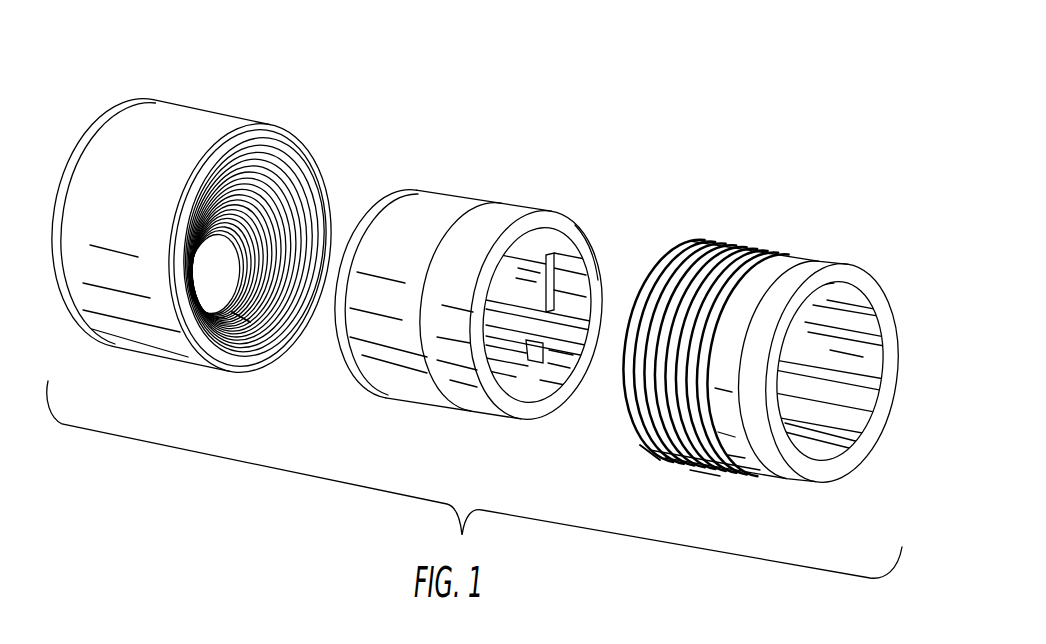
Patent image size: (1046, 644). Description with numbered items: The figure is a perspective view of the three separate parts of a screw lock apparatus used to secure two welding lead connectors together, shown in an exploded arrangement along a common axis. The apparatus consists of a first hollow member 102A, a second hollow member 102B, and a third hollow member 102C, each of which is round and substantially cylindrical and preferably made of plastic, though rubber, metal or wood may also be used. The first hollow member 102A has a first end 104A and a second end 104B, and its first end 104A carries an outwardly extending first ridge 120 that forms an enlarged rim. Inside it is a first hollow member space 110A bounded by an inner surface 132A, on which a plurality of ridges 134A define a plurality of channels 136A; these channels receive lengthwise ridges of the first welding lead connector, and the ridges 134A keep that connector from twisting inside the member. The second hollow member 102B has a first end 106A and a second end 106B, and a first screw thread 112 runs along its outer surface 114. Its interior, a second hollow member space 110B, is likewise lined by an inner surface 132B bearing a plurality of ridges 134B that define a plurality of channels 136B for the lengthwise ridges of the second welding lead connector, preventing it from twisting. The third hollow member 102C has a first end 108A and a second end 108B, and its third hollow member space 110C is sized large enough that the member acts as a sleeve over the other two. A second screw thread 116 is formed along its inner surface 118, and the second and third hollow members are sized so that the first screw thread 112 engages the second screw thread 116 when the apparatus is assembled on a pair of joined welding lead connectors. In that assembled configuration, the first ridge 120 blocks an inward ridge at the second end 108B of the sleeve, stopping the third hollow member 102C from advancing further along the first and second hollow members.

The first hollow member 102A is at (393, 352).
The second hollow member 102B is at (789, 270).
The third hollow member 102C is at (134, 326).
The first end of the first hollow member 104A is at (594, 260).
The second end of the first hollow member 104B is at (384, 204).
The first end of the second hollow member 106A is at (852, 285).
The second end of the second hollow member 106B is at (628, 426).
The first end of the third hollow member 108A is at (268, 128).
The second end of the third hollow member 108B is at (93, 128).
The first hollow member space 110A is at (543, 380).
The second hollow member space 110B is at (836, 466).
The third hollow member space 110C is at (255, 320).
The first screw thread 112 is at (700, 478).
The outer surface of the second hollow member 114 is at (713, 268).
The second screw thread 116 is at (290, 186).
The inner surface of the third hollow member 118 is at (303, 300).
The first ridge 120 is at (508, 214).
The inner surface of the first hollow member 132A is at (580, 296).
The inner surface of the second hollow member 132B is at (860, 348).
The plurality of ridges 134A is at (508, 343).
The plurality of ridges 134B is at (843, 420).
The plurality of channels 136A is at (560, 247).
The plurality of channels 136B is at (855, 396).